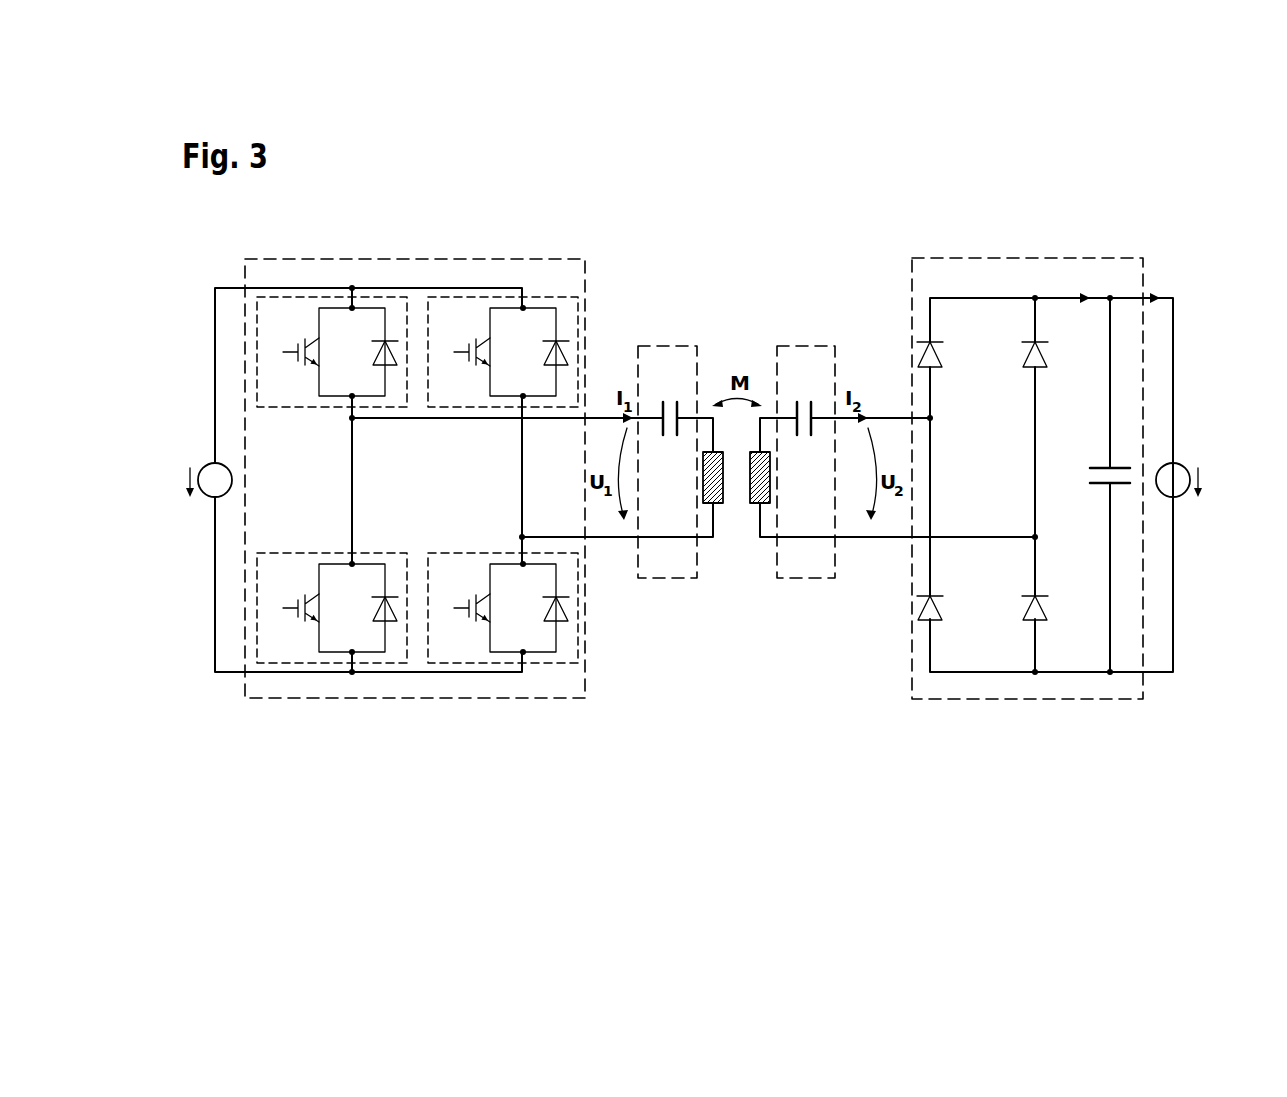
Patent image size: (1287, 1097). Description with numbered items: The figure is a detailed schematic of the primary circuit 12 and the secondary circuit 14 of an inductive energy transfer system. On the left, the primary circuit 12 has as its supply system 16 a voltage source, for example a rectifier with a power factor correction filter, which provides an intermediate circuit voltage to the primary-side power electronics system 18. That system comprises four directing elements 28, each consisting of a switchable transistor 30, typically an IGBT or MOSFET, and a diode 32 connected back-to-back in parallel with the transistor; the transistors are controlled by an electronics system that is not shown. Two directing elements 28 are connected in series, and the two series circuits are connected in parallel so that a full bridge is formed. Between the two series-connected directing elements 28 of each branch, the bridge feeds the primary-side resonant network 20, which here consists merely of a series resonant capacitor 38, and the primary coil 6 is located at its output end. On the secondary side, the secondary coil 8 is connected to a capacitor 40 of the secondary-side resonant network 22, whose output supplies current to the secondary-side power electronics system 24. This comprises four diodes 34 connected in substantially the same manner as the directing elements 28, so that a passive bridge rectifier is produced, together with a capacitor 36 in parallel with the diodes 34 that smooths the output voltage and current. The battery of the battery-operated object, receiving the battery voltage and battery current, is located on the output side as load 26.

The primary circuit 12 is at (222, 716).
The secondary circuit 14 is at (1188, 716).
The supply system 16 is at (199, 466).
The primary-side power electronics system 18 is at (246, 259).
The primary-side resonant network 20 is at (652, 346).
The secondary-side resonant network 22 is at (790, 346).
The secondary-side power electronics system 24 is at (1113, 258).
The load 26 is at (1185, 467).
The directing element 28 is at (331, 297).
The switchable transistor 30 is at (295, 340).
The diode 32 is at (392, 341).
The diode 34 is at (940, 340).
The capacitor 36 is at (1118, 465).
The capacitor 38 is at (680, 410).
The capacitor 40 is at (815, 410).
The primary coil 6 is at (717, 505).
The secondary coil 8 is at (752, 505).